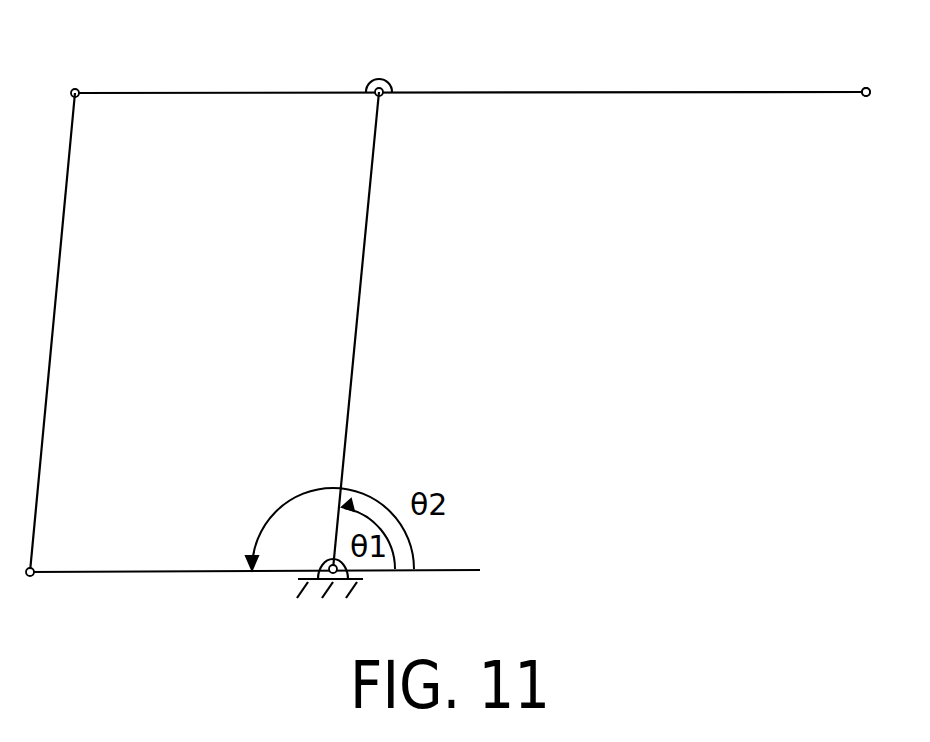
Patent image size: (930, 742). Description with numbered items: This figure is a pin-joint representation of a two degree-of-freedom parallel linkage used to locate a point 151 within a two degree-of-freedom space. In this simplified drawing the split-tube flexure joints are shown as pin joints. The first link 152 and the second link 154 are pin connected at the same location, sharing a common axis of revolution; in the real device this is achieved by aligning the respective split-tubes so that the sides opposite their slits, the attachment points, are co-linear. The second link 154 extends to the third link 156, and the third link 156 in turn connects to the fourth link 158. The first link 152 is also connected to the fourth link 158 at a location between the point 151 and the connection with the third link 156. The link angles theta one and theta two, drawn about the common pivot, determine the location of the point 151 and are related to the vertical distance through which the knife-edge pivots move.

The point 151 is at (866, 97).
The first link 152 is at (365, 252).
The second link 154 is at (60, 573).
The third link 156 is at (62, 247).
The fourth link 158 is at (518, 92).